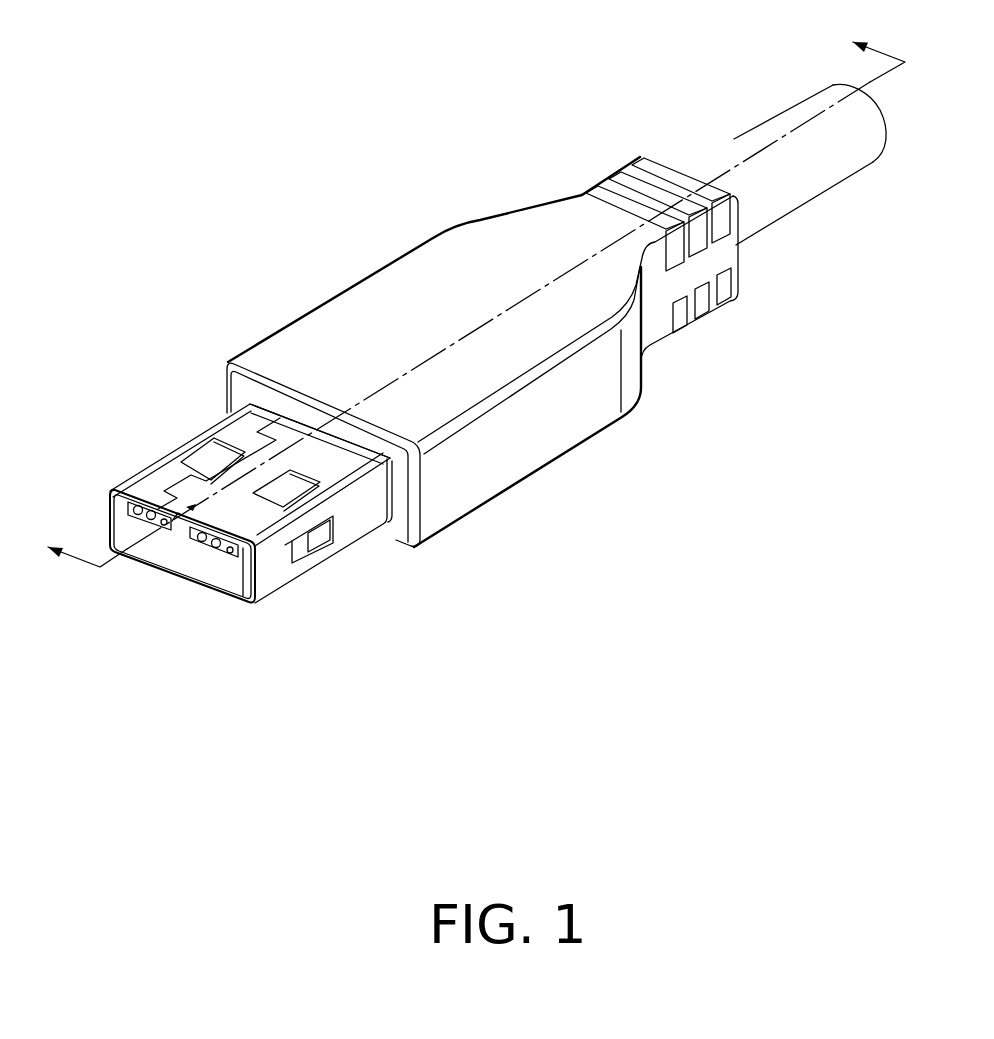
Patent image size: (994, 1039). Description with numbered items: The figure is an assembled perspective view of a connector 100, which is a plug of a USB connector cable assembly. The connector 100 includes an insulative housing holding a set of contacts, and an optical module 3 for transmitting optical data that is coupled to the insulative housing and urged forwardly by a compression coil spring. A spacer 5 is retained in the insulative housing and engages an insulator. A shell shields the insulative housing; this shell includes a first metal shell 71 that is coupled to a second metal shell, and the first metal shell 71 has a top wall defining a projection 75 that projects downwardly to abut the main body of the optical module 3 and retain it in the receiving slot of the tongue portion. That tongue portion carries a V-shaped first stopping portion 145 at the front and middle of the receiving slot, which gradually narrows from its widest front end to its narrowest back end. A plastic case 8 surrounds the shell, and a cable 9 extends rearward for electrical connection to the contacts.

The connector 100 is at (312, 286).
The plastic case 8 is at (438, 272).
The cable 9 is at (738, 150).
The optical module 3 is at (245, 556).
The first metal shell 71 is at (257, 525).
The projection 75 is at (194, 512).
The first stopping portion 145 is at (180, 532).
The spacer 5 is at (469, 303).